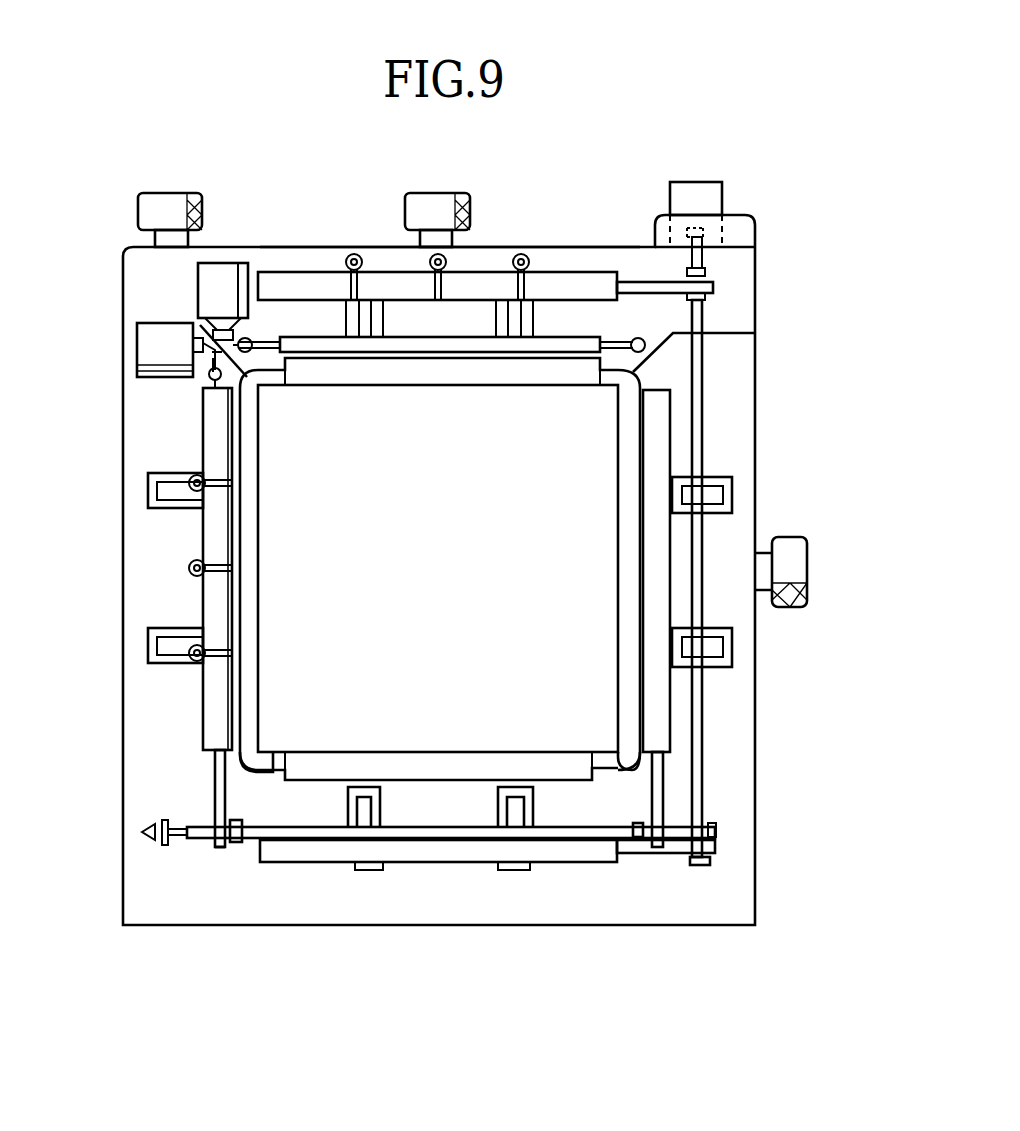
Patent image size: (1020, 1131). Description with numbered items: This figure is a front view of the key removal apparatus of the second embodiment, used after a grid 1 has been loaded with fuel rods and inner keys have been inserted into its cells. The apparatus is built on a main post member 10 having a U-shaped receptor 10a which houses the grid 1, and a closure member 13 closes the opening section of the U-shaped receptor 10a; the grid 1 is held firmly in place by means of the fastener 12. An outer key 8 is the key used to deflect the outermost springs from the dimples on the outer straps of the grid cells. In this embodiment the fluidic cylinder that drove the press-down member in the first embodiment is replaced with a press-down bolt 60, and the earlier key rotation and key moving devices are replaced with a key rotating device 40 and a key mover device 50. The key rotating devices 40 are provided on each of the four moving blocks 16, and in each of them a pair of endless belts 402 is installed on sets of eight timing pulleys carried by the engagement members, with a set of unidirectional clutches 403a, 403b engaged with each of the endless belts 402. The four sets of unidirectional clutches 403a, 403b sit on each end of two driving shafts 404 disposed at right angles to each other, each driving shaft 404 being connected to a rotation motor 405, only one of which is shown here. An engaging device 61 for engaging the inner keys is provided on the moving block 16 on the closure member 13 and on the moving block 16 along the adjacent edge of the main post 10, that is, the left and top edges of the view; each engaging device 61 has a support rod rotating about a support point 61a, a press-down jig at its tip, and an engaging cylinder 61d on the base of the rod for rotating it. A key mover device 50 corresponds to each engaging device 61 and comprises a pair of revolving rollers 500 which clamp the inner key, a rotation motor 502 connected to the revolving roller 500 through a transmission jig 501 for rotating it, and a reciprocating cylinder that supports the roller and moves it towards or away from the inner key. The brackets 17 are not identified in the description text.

The grid 1 is at (290, 433).
The outer key 8 is at (553, 385).
The main post member 10 is at (738, 466).
The U-shaped receptor 10a is at (270, 762).
The fastener 12 is at (175, 193).
The closure member 13 is at (596, 258).
The moving block 16 is at (570, 282).
The brackets 17 is at (372, 318).
The key rotating device 40 is at (725, 298).
The key mover device 50 is at (135, 378).
The press-down bolt 60 is at (447, 193).
The engaging device 61 is at (348, 256).
The support point 61a is at (358, 256).
The engaging cylinder 61d is at (190, 566).
The endless belt 402 is at (640, 282).
The unidirectional clutch 403a is at (712, 280).
The unidirectional clutch 403b is at (708, 300).
The driving shaft 404 is at (705, 378).
The rotation motor 405 is at (700, 190).
The revolving roller 500 is at (508, 354).
The transmission jig 501 is at (250, 340).
The rotation motor 502 is at (228, 263).